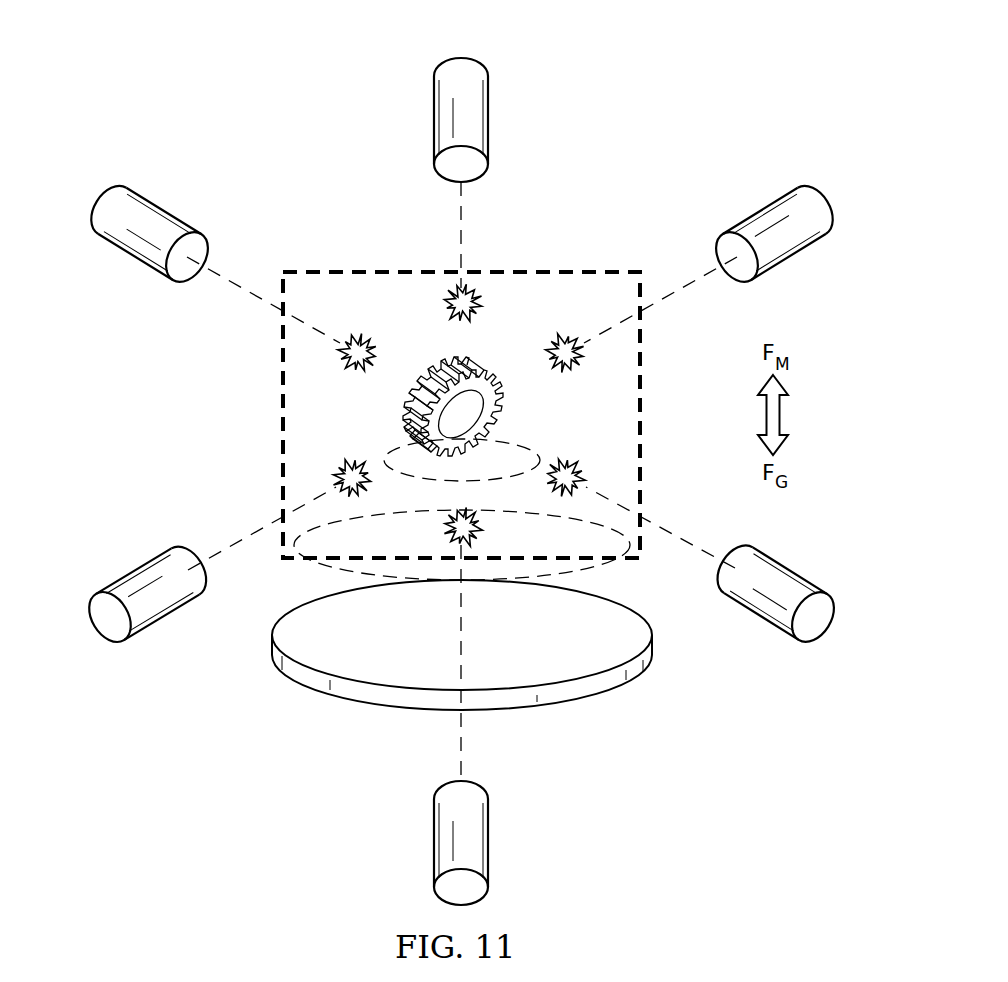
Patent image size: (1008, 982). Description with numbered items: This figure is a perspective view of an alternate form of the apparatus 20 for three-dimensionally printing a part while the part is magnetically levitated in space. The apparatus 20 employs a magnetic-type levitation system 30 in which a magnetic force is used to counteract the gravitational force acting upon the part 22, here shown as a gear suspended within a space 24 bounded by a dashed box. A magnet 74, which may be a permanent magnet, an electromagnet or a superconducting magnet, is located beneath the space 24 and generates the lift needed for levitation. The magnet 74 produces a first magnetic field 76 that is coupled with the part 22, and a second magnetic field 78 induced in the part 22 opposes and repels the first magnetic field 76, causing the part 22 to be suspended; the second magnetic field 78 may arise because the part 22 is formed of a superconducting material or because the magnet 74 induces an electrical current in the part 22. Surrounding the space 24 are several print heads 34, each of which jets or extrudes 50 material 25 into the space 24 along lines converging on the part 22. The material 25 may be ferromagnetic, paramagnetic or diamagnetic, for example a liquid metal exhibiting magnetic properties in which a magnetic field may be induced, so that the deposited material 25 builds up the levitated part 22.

The apparatus 20 is at (677, 76).
The part 22 is at (497, 405).
The space 24 is at (642, 468).
The material 25 is at (455, 290).
The magnetic-type levitation system 30 is at (215, 383).
The print heads 34 is at (489, 120).
The jet or extrude 50 is at (463, 228).
The magnet 74 is at (412, 714).
The first magnetic field 76 is at (412, 608).
The second magnetic field 78 is at (386, 450).